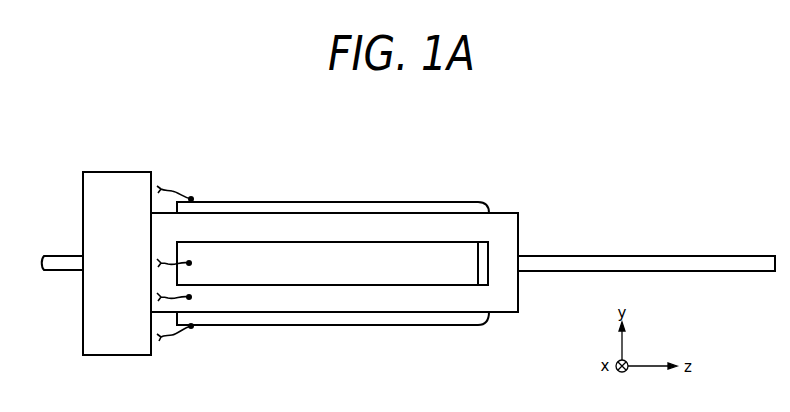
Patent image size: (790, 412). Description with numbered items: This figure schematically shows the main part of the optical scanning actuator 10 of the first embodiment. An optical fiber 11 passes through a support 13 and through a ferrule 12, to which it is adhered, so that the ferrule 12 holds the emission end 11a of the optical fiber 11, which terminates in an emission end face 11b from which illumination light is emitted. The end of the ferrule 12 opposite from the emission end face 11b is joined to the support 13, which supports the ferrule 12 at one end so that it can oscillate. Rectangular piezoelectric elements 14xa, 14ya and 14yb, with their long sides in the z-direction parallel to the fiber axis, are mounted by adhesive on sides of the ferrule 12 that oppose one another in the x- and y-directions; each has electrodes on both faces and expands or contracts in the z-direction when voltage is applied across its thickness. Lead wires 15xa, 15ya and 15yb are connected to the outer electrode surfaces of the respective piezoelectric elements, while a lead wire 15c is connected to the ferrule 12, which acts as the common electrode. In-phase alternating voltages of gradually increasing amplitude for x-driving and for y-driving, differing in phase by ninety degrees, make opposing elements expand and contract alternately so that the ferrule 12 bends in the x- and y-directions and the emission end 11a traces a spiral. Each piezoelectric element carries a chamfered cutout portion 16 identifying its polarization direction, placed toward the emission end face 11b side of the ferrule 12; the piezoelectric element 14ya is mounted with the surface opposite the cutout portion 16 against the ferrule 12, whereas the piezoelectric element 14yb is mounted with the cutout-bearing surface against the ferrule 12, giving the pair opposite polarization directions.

The optical scanning actuator 10 is at (353, 170).
The optical fiber 11 is at (570, 253).
The emission end 11a is at (682, 262).
The emission end face 11b is at (775, 256).
The ferrule 12 is at (508, 232).
The support 13 is at (102, 212).
The piezoelectric element 14xa is at (320, 250).
The piezoelectric element 14ya is at (252, 205).
The piezoelectric element 14yb is at (333, 344).
The lead wire 15xa is at (160, 261).
The lead wire 15ya is at (190, 197).
The lead wire 15yb is at (189, 329).
The lead wire 15c is at (160, 295).
The cutout portion 16 is at (483, 203).